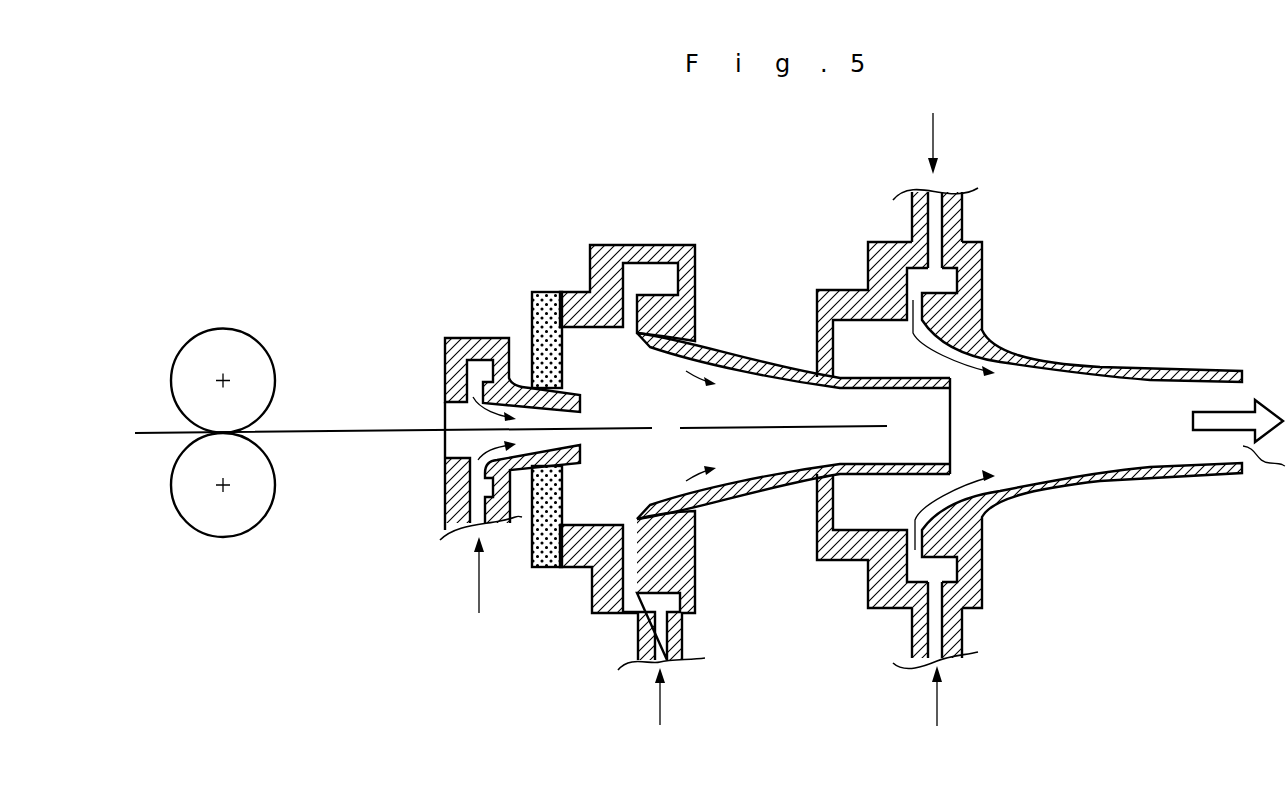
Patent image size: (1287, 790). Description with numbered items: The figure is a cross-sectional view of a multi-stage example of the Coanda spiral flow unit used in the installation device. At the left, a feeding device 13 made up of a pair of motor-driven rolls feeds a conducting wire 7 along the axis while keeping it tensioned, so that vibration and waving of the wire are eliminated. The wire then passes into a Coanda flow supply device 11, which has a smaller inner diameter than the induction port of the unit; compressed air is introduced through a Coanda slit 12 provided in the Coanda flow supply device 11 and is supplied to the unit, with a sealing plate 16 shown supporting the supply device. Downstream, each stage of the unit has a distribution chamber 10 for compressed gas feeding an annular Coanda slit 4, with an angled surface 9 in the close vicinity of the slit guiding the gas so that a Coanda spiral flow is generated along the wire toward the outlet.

The annular Coanda slit 4 is at (910, 333).
The conducting wire 7 is at (359, 430).
The angled surface 9 is at (630, 308).
The distribution chamber 10 is at (640, 578).
The Coanda flow supply device 11 is at (467, 337).
The Coanda slit 12 is at (445, 432).
The feeding device 13 is at (267, 468).
The spacer / sealing block 16 is at (533, 313).